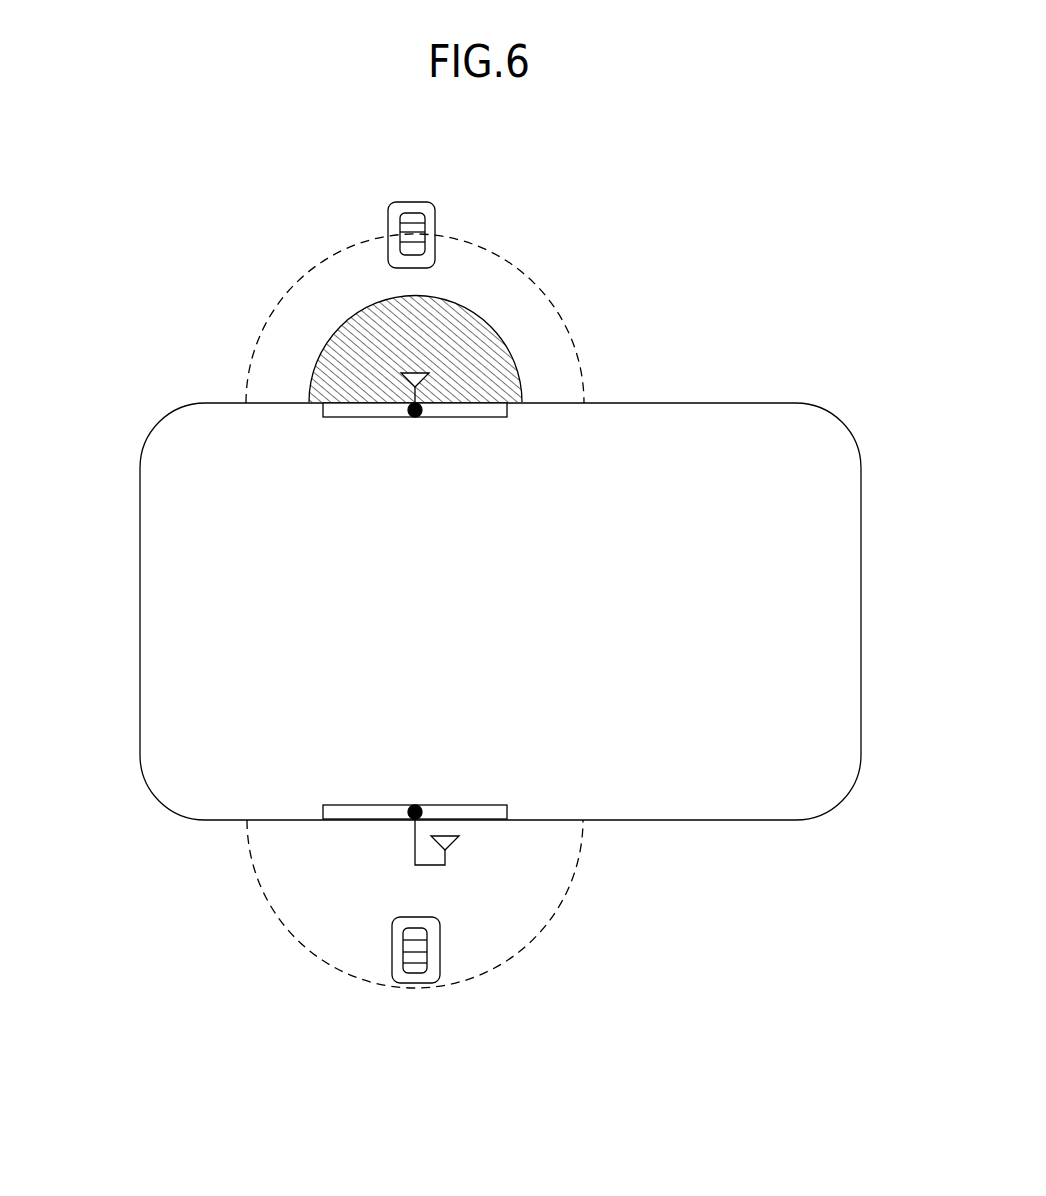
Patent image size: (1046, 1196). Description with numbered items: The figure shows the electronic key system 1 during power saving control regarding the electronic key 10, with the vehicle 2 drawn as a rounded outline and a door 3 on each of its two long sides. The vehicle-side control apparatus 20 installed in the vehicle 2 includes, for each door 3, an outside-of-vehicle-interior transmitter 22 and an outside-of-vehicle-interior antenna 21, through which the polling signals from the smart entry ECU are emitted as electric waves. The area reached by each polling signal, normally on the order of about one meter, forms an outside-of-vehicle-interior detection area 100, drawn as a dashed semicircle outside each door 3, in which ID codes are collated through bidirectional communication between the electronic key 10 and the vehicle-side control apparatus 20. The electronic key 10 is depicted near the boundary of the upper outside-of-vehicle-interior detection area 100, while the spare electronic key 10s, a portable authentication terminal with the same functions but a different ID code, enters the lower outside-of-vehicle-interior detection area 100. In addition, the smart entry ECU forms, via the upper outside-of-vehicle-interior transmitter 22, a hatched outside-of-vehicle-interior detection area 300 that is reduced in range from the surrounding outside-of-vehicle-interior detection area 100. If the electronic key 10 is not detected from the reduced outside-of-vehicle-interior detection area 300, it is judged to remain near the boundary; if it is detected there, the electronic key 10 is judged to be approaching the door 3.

The electronic key system 1 is at (66, 210).
The vehicle 2 is at (152, 431).
The door 3 is at (345, 421).
The electronic key 10 is at (436, 214).
The spare electronic key 10s is at (393, 960).
The vehicle-side control apparatus 20 is at (181, 359).
The outside-of-vehicle-interior antenna 21 is at (401, 384).
The outside-of-vehicle-interior transmitter 22 is at (410, 413).
The outside-of-vehicle-interior detection area 100 is at (557, 300).
The outside-of-vehicle-interior detection area (reduced) 300 is at (436, 298).